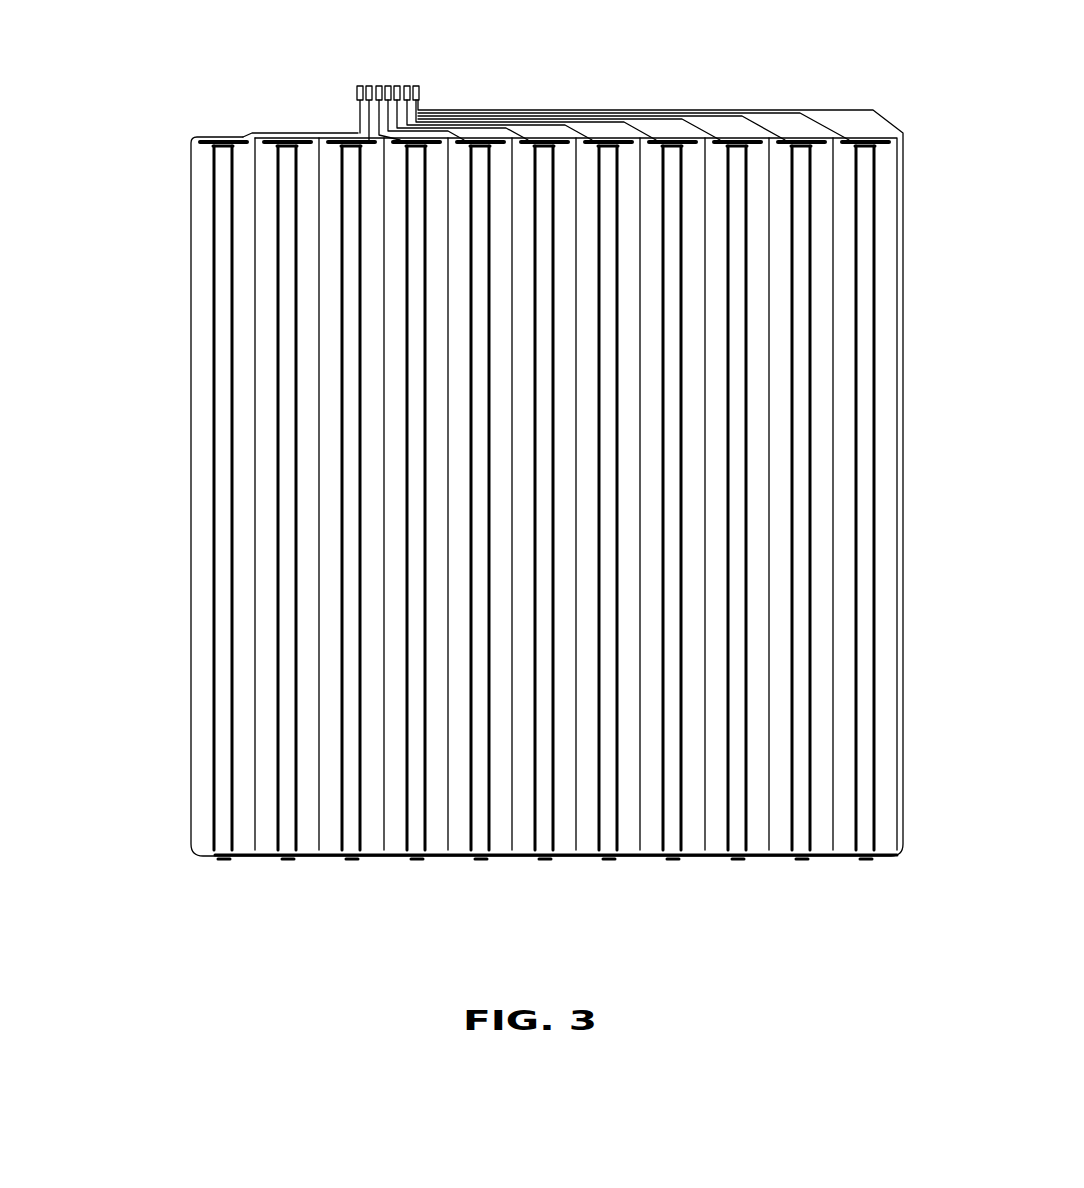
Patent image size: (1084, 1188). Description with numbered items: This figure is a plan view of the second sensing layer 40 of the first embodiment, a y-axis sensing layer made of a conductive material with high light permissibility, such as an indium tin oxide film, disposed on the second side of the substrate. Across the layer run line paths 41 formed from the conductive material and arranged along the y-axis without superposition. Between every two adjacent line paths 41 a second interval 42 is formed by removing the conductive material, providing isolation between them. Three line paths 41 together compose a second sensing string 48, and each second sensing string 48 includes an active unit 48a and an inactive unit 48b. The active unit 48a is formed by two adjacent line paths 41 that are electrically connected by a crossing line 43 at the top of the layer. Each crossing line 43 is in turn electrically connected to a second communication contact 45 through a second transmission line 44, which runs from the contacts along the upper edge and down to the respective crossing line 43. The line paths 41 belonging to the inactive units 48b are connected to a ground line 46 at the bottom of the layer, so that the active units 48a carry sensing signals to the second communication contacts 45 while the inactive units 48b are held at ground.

The second sensing layer 40 is at (170, 430).
The line path 41 is at (198, 209).
The second interval 42 is at (212, 565).
The crossing line 43 is at (226, 133).
The second transmission line 44 is at (655, 112).
The second communication contact 45 is at (358, 88).
The ground line 46 is at (258, 860).
The second sensing string 48 is at (217, 130).
The active unit 48a is at (479, 235).
The inactive unit 48b is at (482, 887).